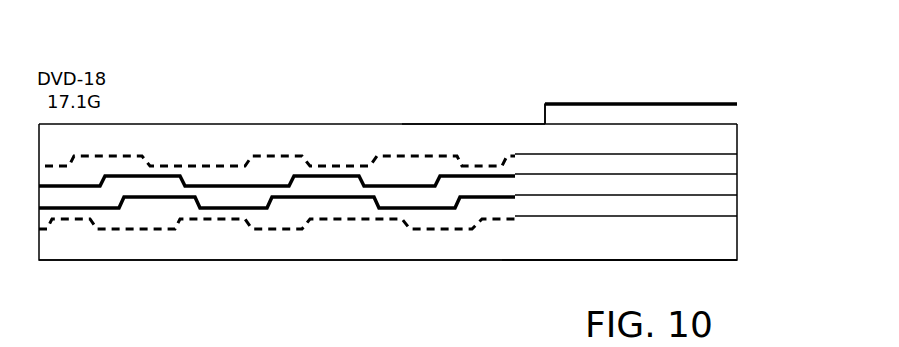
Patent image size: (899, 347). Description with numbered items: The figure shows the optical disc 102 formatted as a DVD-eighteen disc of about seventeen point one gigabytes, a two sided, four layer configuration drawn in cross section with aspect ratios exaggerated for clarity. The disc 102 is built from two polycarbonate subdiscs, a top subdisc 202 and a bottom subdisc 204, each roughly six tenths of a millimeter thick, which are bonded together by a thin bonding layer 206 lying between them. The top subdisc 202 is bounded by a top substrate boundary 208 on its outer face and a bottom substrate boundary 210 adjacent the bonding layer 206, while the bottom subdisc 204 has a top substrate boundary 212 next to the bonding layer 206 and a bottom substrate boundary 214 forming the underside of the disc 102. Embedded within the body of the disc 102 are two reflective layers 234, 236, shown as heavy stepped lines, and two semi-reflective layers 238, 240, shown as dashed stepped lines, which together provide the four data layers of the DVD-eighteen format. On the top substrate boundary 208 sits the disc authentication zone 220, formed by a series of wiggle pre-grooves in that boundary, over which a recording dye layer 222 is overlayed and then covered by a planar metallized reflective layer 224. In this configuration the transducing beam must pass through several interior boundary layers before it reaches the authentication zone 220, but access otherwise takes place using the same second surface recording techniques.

The optical disc 102 is at (152, 33).
The top subdisc 202 is at (710, 136).
The bottom subdisc 204 is at (697, 241).
The bonding layer 206 is at (720, 178).
The top substrate boundary 208 is at (470, 122).
The bottom substrate boundary 210 is at (538, 152).
The top substrate boundary 212 is at (545, 215).
The bottom substrate boundary 214 is at (545, 258).
The disc authentication zone 220 is at (657, 74).
The recording dye layer 222 is at (590, 113).
The metallized reflective layer 224 is at (620, 101).
The embedded reflective layer 234 is at (331, 174).
The embedded reflective layer 236 is at (283, 196).
The embedded semi-reflective layer 238 is at (299, 153).
The embedded semi-reflective layer 240 is at (135, 227).